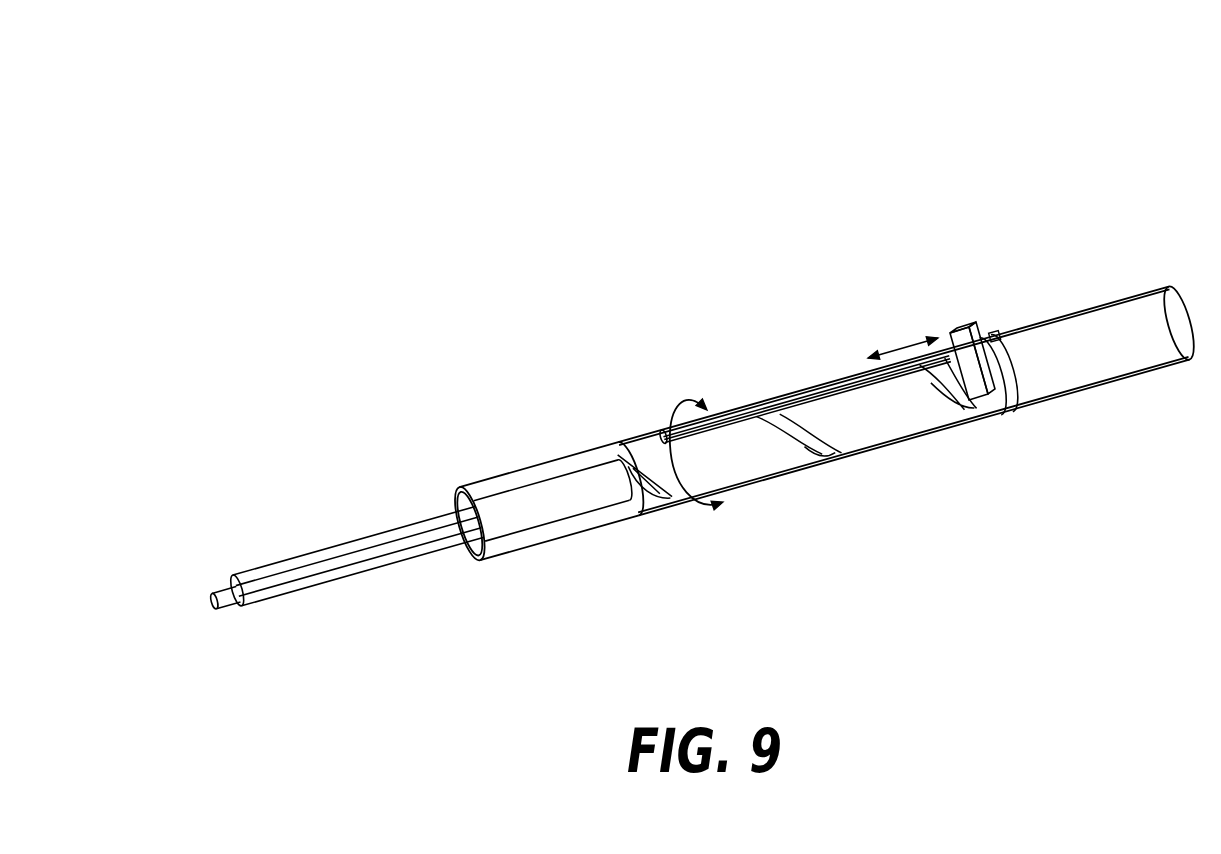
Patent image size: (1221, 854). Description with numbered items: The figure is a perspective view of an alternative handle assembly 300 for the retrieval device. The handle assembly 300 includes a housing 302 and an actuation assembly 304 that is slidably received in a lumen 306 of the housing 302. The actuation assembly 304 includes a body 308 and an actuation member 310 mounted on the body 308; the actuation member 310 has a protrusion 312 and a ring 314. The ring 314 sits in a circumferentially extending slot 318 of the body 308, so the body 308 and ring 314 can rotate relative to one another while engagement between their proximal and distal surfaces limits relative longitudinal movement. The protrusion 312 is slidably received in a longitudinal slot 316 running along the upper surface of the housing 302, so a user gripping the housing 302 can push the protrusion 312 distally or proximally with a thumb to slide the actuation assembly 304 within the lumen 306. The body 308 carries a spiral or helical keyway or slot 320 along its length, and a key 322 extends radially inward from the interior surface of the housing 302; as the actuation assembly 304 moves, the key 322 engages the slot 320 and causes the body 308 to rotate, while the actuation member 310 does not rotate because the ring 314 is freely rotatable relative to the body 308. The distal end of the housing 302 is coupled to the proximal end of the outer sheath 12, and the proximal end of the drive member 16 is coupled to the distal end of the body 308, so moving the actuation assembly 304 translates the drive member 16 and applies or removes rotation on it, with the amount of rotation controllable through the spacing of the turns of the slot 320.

The outer sheath 12 is at (290, 556).
The drive member 16 is at (510, 553).
The handle assembly 300 is at (1068, 175).
The housing 302 is at (626, 443).
The actuation assembly 304 is at (752, 496).
The lumen 306 is at (588, 513).
The body 308 is at (887, 420).
The actuation member 310 is at (983, 399).
The protrusion 312 is at (960, 328).
The ring 314 is at (997, 343).
The longitudinal slot 316 is at (742, 420).
The circumferentially extending slot 318 is at (1002, 383).
The slot 320 is at (797, 443).
The key 322 is at (668, 505).